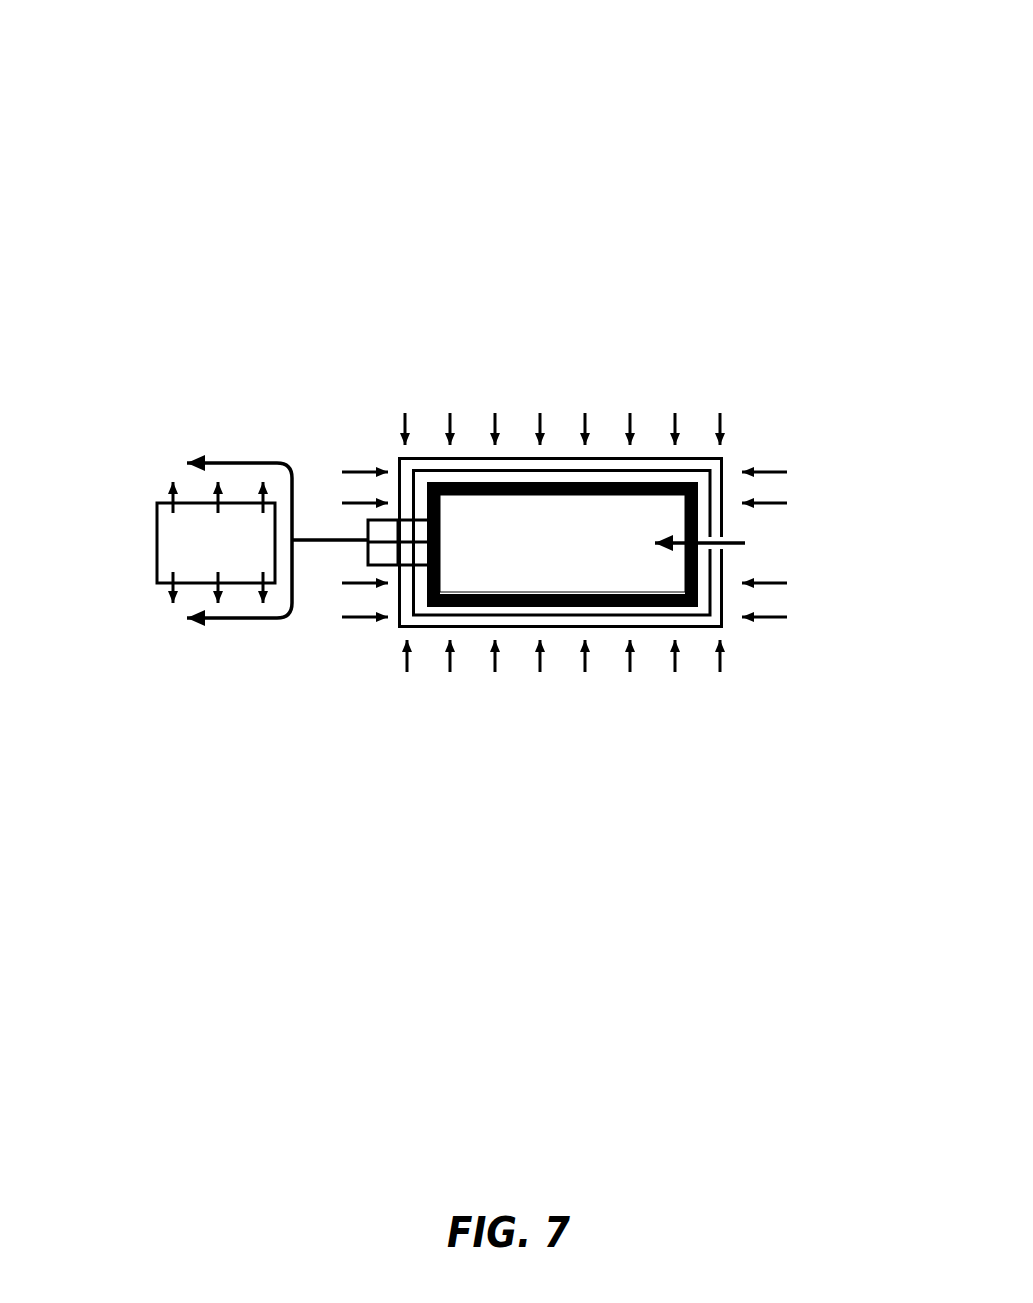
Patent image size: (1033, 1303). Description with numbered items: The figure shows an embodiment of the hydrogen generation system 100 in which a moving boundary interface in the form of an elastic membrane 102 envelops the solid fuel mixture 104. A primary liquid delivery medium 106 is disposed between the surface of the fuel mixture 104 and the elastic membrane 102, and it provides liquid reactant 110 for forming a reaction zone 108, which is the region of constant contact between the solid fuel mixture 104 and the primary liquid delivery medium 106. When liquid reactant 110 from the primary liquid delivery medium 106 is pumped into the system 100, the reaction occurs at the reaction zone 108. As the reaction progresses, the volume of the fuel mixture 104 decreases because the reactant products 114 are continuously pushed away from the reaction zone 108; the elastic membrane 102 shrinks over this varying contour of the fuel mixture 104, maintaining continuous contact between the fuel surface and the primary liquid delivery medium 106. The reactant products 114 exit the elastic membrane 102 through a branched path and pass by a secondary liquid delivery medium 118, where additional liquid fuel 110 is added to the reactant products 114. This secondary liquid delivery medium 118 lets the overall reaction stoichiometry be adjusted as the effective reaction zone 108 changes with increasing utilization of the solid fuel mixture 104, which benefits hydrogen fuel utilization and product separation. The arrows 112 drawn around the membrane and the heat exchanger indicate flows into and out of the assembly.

The hydrogen generation system 100 is at (89, 112).
The moving boundary interface 102 is at (688, 458).
The solid fuel mixture 104 is at (597, 534).
The primary liquid delivery medium 106 is at (593, 470).
The reaction zone 108 is at (483, 483).
The liquid reactant 110 is at (725, 541).
The heat flux arrows 112 is at (722, 427).
The reactant products 114 is at (262, 463).
The secondary liquid delivery medium 118 is at (190, 503).